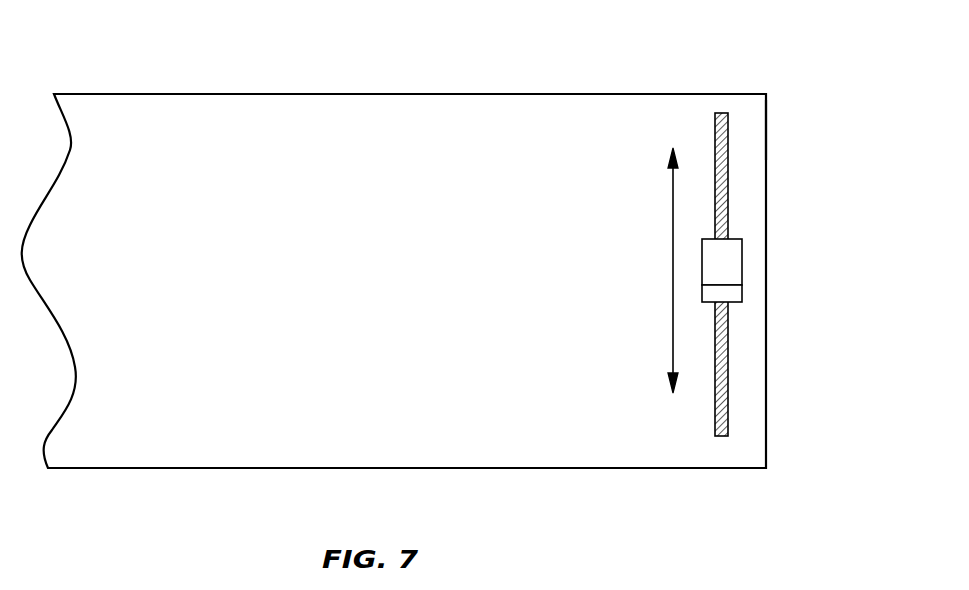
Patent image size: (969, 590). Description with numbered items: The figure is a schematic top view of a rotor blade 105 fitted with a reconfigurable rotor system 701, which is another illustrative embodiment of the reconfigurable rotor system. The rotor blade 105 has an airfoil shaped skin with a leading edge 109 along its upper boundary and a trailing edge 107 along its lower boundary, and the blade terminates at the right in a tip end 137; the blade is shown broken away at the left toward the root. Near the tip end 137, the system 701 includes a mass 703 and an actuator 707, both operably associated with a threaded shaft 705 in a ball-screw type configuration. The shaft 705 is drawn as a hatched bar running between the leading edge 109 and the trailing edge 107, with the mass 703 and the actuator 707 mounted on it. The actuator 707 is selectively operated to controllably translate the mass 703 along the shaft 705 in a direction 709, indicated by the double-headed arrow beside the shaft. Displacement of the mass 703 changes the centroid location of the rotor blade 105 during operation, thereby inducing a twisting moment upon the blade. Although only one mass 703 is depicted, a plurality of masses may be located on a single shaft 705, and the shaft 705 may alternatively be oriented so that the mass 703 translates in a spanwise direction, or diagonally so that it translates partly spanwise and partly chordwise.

The rotor blade 105 is at (185, 93).
The reconfigurable rotor system 701 is at (330, 68).
The leading edge 109 is at (508, 87).
The tip end 137 is at (773, 118).
The trailing edge 107 is at (669, 474).
The mass 703 is at (742, 255).
The threaded shaft 705 is at (728, 389).
The actuator 707 is at (742, 295).
The direction 709 is at (672, 265).